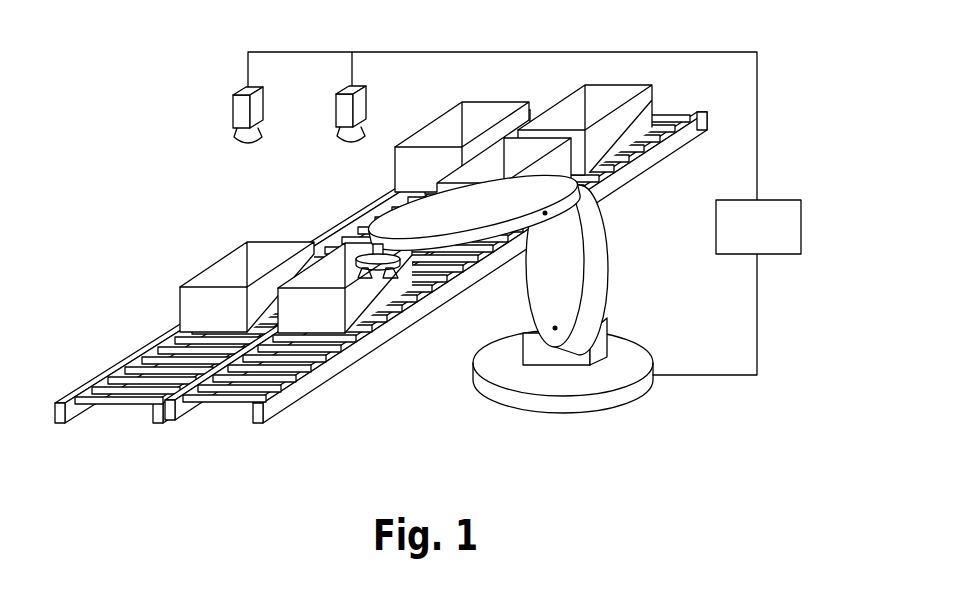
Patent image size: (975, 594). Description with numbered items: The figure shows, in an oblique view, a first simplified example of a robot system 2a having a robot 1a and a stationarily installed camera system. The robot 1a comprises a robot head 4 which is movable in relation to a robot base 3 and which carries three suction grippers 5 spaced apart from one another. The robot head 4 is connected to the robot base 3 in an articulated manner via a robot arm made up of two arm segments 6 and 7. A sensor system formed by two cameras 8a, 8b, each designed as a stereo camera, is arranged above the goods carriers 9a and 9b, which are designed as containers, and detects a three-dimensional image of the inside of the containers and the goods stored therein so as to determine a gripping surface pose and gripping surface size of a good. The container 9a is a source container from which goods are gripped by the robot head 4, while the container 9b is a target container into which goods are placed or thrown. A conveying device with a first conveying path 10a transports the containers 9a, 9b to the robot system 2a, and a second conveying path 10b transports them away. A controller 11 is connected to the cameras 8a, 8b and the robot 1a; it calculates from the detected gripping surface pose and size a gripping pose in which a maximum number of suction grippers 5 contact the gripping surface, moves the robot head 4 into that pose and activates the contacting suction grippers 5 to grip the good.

The robot 1a is at (618, 227).
The robot system 2a is at (803, 42).
The robot base 3 is at (598, 400).
The robot head 4 is at (358, 246).
The suction grippers 5 is at (428, 293).
The arm segment 6 is at (597, 263).
The arm segment 7 is at (417, 222).
The camera 8a is at (240, 115).
The camera 8b is at (358, 112).
The source container 9a is at (193, 312).
The target container 9b is at (355, 308).
The first conveying path 10a is at (112, 427).
The second conveying path 10b is at (205, 427).
The controller 11 is at (787, 227).